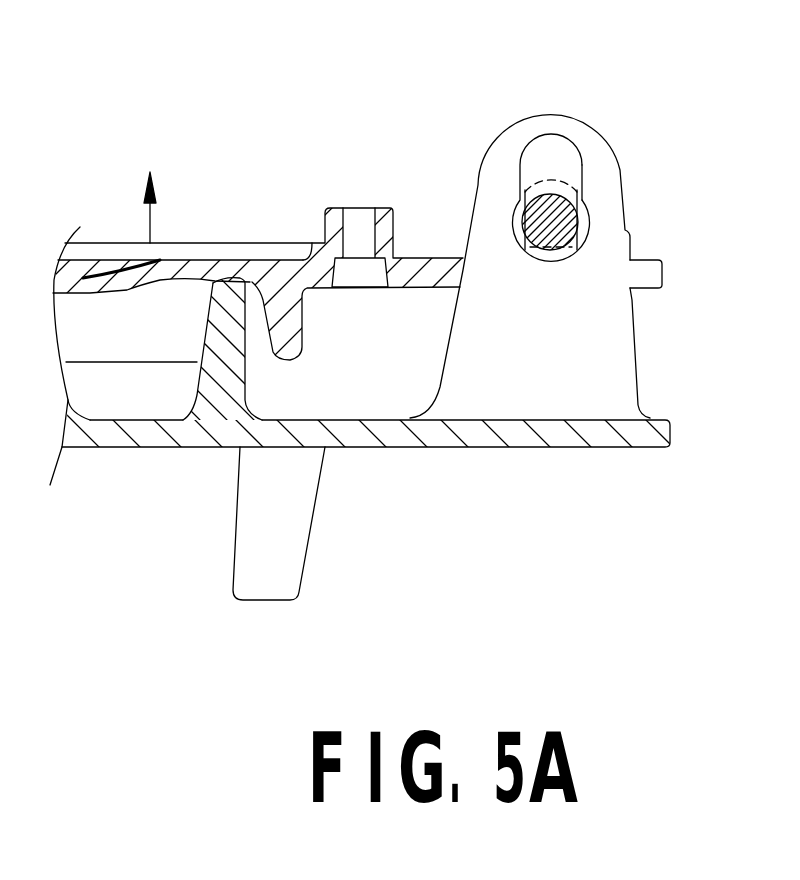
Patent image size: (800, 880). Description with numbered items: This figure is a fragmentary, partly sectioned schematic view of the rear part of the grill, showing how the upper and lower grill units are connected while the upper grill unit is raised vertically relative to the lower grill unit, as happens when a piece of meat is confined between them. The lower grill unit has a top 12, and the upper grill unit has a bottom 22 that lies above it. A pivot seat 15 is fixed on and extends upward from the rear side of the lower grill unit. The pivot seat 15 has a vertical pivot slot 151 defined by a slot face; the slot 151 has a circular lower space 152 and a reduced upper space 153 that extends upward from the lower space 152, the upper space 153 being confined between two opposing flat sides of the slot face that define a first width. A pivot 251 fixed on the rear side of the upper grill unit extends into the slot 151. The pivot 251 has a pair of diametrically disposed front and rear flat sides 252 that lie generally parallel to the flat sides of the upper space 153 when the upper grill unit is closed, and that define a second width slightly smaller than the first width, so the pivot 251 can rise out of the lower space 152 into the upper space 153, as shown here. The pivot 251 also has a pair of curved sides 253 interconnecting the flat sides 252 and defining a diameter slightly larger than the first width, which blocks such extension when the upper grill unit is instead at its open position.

The top 12 is at (487, 431).
The pivot seat 15 is at (617, 343).
The vertical pivot slot 151 is at (562, 195).
The circular lower space 152 is at (632, 292).
The reduced upper space 153 is at (539, 140).
The bottom 22 is at (281, 282).
The pivot 251 is at (567, 190).
The flat side 252 is at (522, 230).
The curved side 253 is at (536, 190).